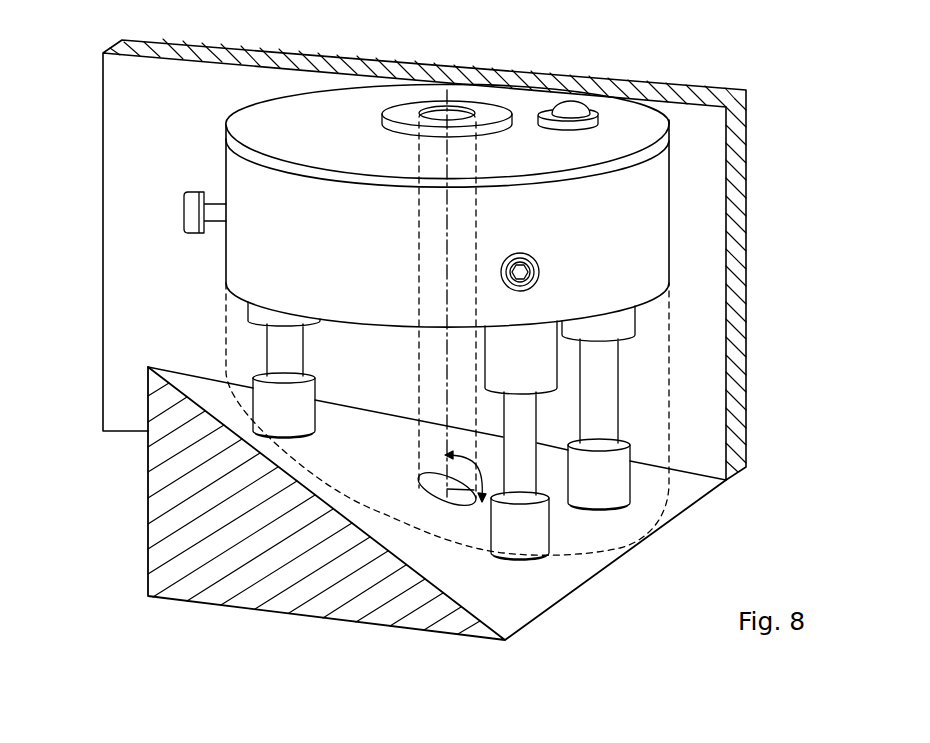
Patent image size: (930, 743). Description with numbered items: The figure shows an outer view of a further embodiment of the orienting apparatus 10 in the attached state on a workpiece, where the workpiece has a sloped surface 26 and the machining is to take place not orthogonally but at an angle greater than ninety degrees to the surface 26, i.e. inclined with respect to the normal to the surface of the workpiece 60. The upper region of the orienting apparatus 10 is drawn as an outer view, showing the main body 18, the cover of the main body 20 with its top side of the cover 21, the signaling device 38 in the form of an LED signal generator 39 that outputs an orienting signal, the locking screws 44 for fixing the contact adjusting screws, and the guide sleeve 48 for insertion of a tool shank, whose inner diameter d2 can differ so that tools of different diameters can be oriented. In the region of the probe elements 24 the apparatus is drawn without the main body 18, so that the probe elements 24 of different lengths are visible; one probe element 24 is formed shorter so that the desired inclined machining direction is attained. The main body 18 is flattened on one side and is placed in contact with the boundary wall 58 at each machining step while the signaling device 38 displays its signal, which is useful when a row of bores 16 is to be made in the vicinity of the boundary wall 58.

The orienting apparatus 10 is at (712, 197).
The boundary wall 58 is at (135, 114).
The surface of the workpiece 26 is at (498, 571).
The bore 16 is at (432, 482).
The main body 18 is at (243, 258).
The cover of the main body 20 is at (443, 116).
The top side of the cover 21 is at (284, 112).
The guide sleeve 48 is at (405, 115).
The signaling device 38 is at (601, 80).
The LED signal generator 39 is at (568, 115).
The locking screw 44 is at (545, 272).
The probe elements 24 is at (296, 353).
The normal to the surface of the workpiece 60 is at (447, 291).
The inner diameter of the guide sleeve d2 is at (476, 271).